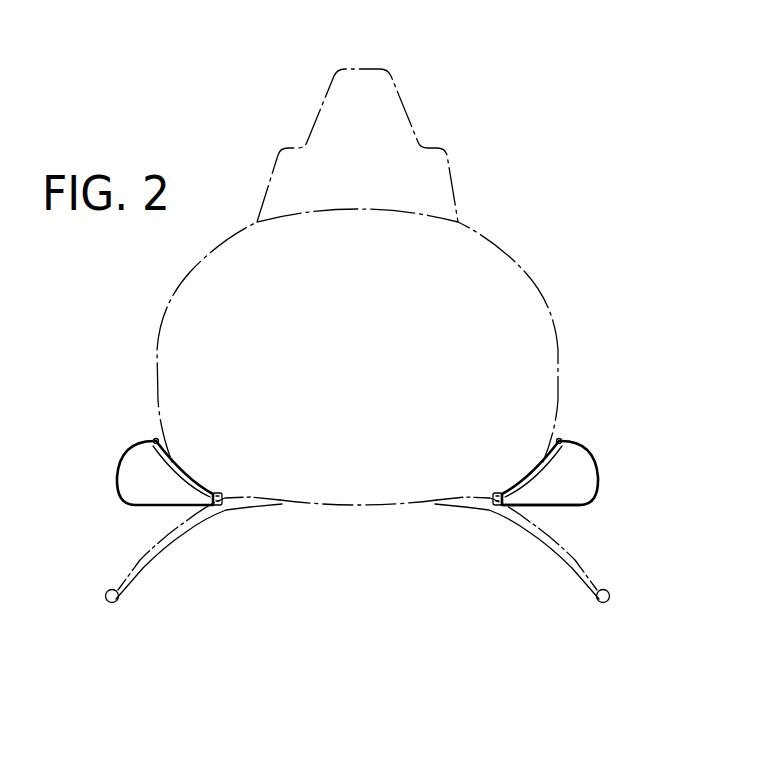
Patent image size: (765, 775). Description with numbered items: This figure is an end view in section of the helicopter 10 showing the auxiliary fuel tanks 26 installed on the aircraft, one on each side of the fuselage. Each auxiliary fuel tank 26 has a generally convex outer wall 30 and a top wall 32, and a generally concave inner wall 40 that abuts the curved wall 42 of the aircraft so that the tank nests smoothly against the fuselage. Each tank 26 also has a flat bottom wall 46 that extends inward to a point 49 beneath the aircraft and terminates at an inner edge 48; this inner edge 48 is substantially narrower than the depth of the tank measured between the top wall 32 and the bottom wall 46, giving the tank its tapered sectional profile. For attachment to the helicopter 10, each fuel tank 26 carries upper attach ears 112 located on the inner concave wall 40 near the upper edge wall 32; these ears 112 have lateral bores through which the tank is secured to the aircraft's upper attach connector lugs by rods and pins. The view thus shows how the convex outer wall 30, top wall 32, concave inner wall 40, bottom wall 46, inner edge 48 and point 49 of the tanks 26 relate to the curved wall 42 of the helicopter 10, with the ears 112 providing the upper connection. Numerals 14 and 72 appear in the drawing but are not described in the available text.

The helicopter 10 is at (482, 184).
The helmet shell 14 is at (533, 275).
The auxiliary fuel tank 26 is at (360, 460).
The outer wall 30 is at (117, 486).
The top wall 32 is at (599, 474).
The inner wall 40 is at (543, 462).
The curved wall 42 is at (173, 462).
The bottom wall 46 is at (566, 506).
The inner edge 48 is at (491, 493).
The point 49 is at (236, 497).
The left clip end block 72 is at (195, 479).
The upper attach ear 112 is at (562, 441).